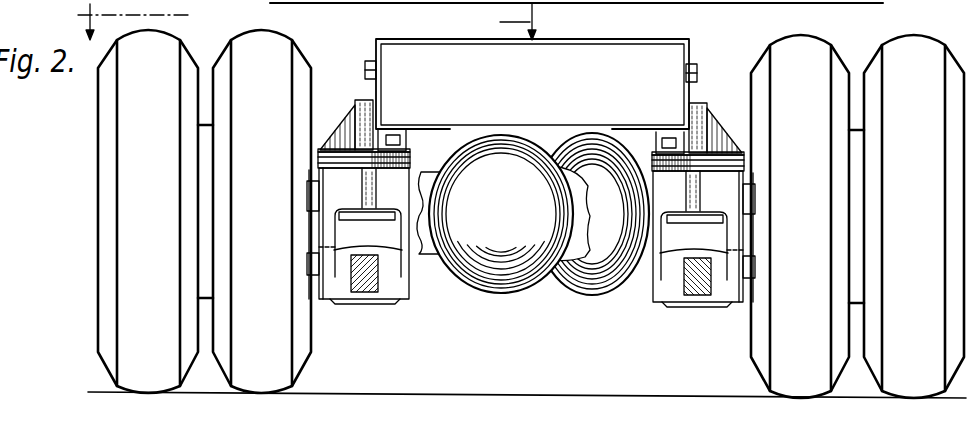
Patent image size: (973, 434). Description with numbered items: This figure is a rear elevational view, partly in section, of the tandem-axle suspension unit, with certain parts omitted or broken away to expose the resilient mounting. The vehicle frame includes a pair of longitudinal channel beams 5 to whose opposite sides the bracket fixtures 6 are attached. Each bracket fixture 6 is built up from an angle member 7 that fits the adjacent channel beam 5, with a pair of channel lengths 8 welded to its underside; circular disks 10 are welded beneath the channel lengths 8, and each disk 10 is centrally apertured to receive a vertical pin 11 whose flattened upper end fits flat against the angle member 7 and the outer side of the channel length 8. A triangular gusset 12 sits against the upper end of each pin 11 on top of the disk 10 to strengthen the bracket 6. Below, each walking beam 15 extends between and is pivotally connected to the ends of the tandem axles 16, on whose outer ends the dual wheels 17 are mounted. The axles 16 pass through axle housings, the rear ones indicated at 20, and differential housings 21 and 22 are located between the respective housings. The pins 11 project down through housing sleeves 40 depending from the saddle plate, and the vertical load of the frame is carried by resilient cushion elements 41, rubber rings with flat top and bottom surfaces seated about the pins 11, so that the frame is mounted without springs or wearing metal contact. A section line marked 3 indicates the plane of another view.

The section line 3- 3 is at (305, 21).
The longitudinal channel beam 5 is at (393, 41).
The bracket fixture 6 is at (355, 60).
The angle member 7 is at (366, 71).
The channel length 8 is at (386, 142).
The circular disk 10 is at (407, 152).
The vertical pin 11 is at (356, 102).
The triangular gusset 12 is at (349, 111).
The walking beam 15 is at (364, 296).
The tandem axle 16 is at (312, 184).
The dual wheel 17 is at (232, 45).
The rear axle housing 20 is at (420, 257).
The differential housing 21 is at (592, 297).
The differential housing 22 is at (507, 294).
The housing sleeve 40 is at (371, 222).
The resilient cushion element 41 is at (318, 158).